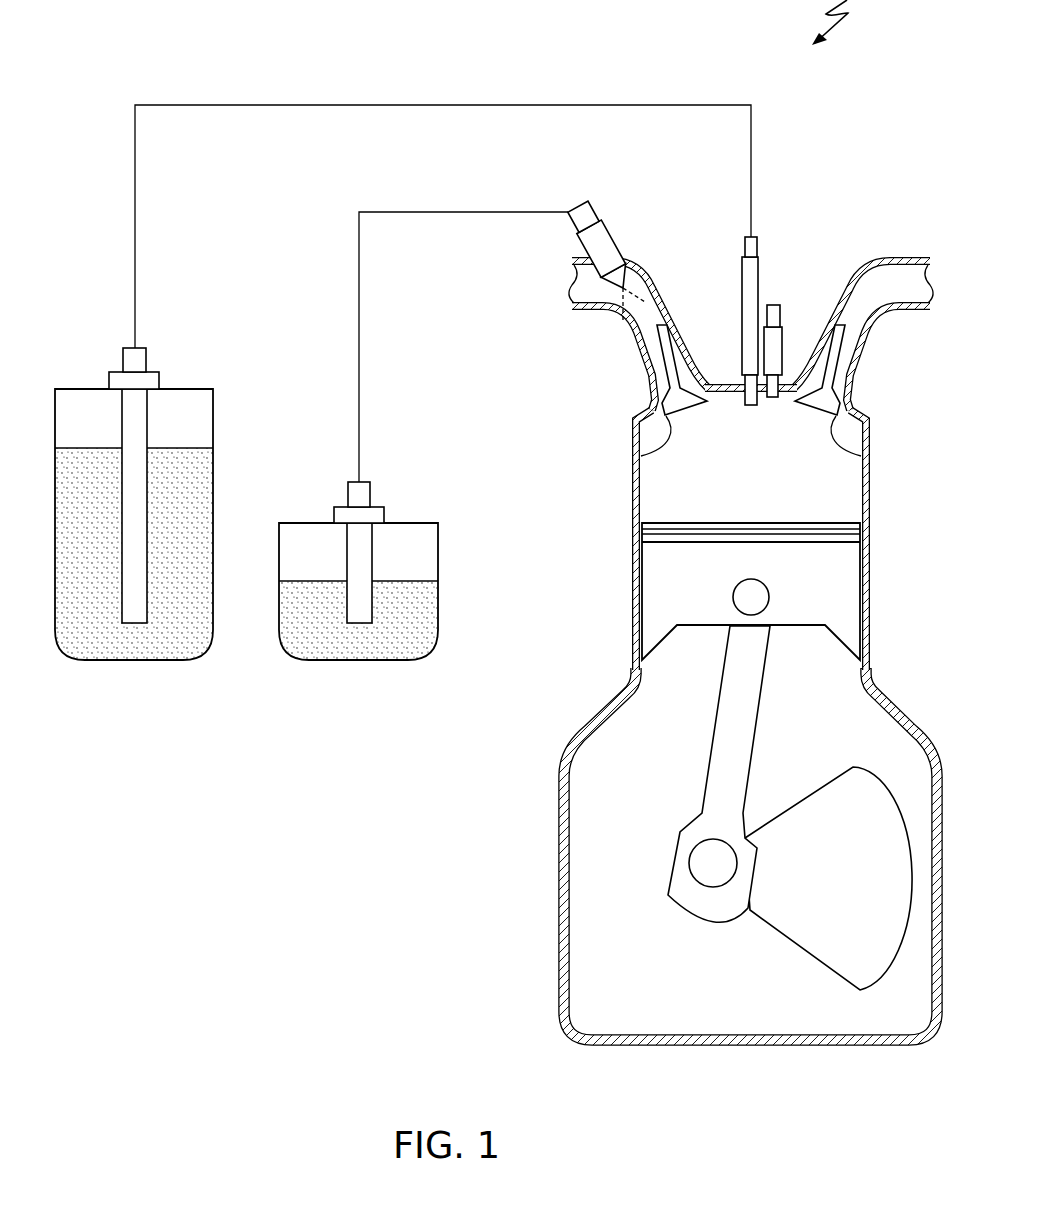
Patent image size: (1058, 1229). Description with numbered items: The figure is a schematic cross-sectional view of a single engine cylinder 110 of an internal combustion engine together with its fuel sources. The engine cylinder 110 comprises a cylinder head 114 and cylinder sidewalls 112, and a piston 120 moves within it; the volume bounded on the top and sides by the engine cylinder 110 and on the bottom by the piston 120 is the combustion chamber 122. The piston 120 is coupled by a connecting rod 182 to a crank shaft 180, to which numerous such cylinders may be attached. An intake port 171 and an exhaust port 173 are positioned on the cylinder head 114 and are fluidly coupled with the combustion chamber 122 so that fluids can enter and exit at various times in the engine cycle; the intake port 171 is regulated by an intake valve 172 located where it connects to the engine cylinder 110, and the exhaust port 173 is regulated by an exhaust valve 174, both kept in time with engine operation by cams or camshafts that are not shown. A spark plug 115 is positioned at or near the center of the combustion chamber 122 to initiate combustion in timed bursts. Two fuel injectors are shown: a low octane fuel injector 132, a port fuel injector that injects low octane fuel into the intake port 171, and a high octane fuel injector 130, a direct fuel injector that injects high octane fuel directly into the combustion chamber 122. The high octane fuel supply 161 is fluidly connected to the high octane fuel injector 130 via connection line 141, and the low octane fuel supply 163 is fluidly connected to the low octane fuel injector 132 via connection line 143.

The engine cylinder 110 is at (872, 595).
The cylinder sidewalls 112 is at (630, 595).
The cylinder head 114 is at (717, 383).
The spark plug 115 is at (778, 304).
The piston 120 is at (730, 523).
The combustion chamber 122 is at (765, 447).
The high octane fuel injector 130 is at (758, 240).
The low octane fuel injector 132 is at (605, 227).
The connection line 141 is at (216, 105).
The connection line 143 is at (447, 212).
The high octane fuel supply 161 is at (127, 660).
The low octane fuel supply 163 is at (357, 660).
The intake port 171 is at (645, 376).
The intake valve 172 is at (641, 456).
The exhaust port 173 is at (858, 376).
The exhaust valve 174 is at (861, 456).
The crank shaft 180 is at (833, 780).
The connecting rod 182 is at (708, 767).